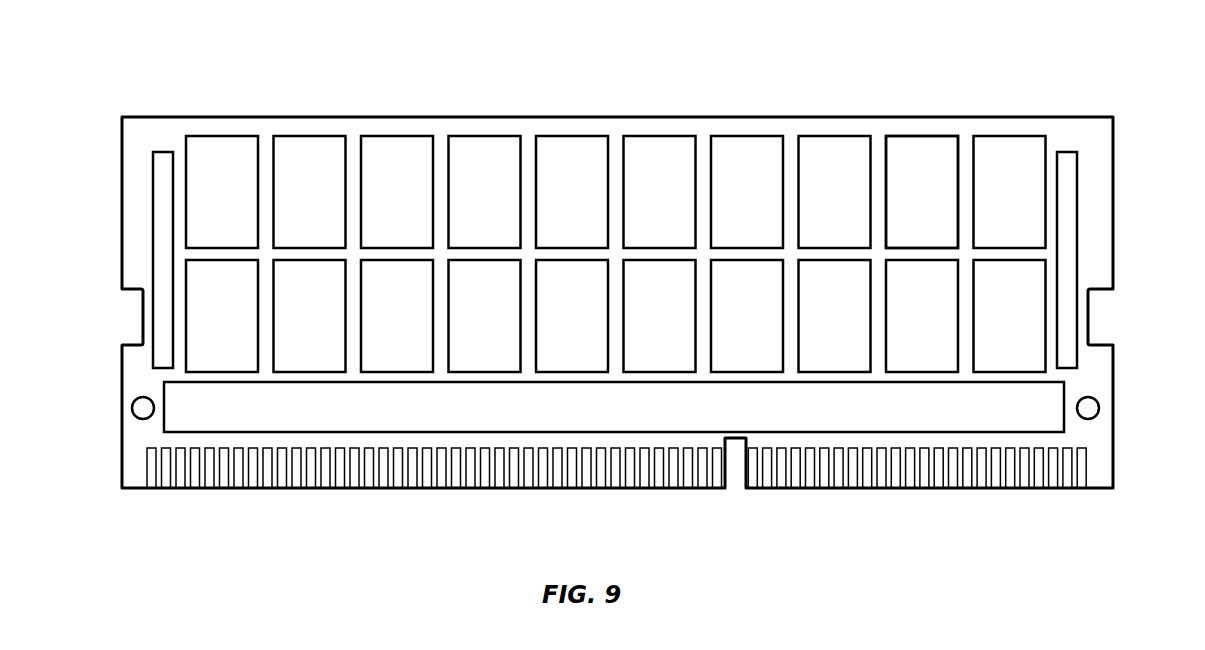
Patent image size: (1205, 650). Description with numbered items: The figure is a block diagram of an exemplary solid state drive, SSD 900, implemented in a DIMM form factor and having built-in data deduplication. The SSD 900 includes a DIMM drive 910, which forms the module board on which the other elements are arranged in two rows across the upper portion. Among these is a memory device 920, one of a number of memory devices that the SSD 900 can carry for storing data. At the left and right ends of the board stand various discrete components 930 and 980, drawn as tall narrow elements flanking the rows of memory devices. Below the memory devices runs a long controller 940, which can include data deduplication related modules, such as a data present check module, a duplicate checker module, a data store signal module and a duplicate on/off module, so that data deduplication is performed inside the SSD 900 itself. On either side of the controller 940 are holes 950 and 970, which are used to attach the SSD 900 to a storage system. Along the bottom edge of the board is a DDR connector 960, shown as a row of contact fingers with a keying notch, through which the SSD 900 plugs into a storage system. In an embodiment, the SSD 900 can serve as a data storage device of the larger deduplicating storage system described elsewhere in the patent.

The SSD 900 is at (152, 88).
The DIMM drive 910 is at (360, 117).
The memory device 920 is at (922, 136).
The discrete component 930 is at (1077, 213).
The controller 940 is at (1064, 388).
The hole 950 is at (1099, 408).
The DDR connector 960 is at (270, 485).
The hole 970 is at (132, 408).
The discrete component 980 is at (153, 217).